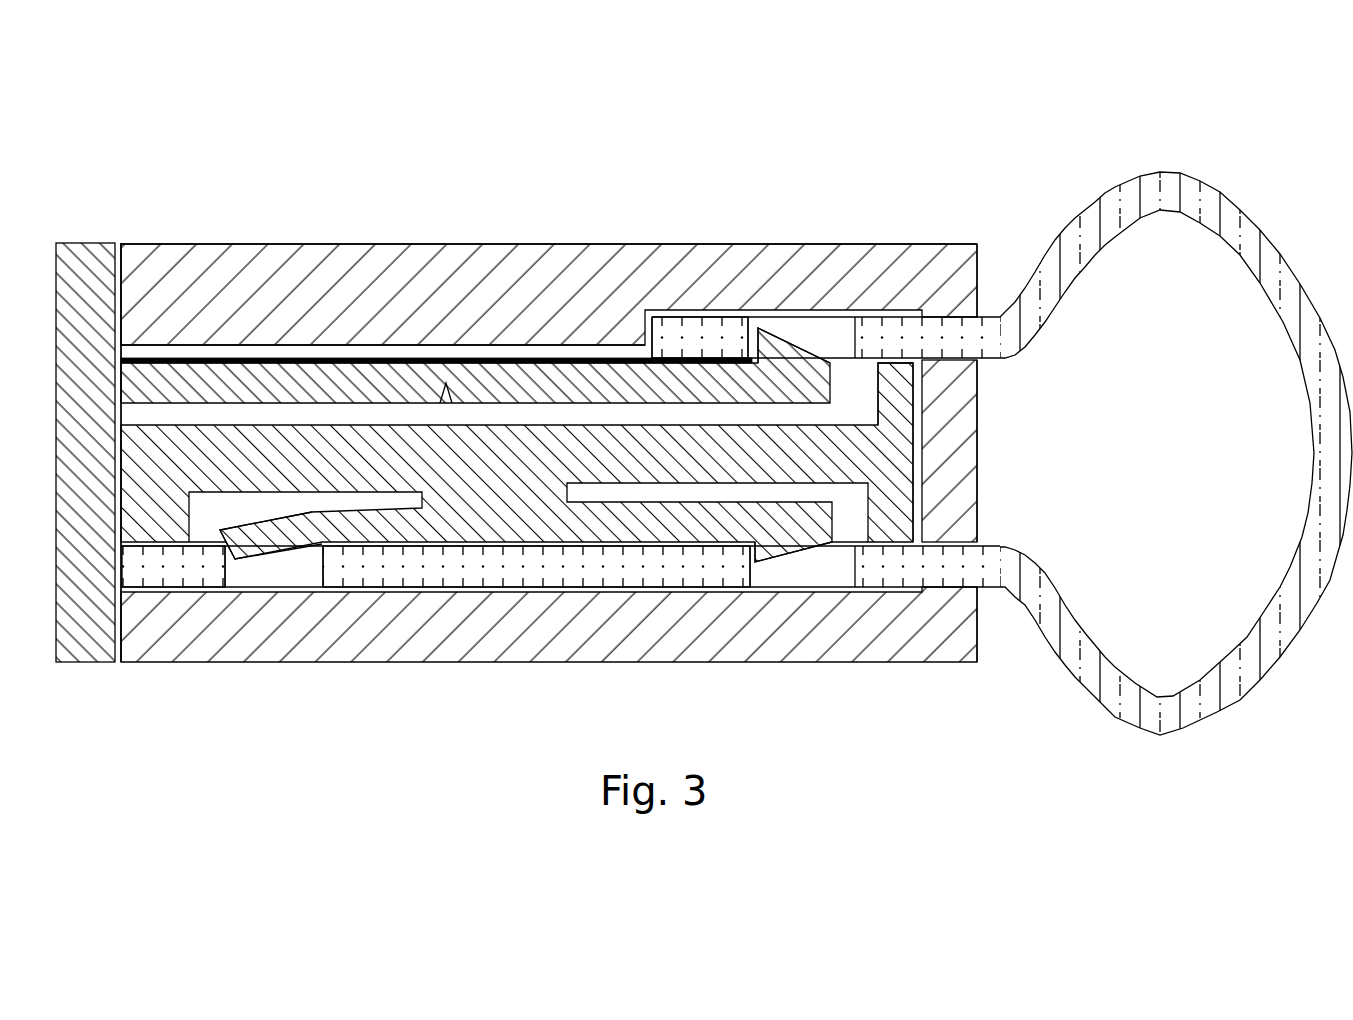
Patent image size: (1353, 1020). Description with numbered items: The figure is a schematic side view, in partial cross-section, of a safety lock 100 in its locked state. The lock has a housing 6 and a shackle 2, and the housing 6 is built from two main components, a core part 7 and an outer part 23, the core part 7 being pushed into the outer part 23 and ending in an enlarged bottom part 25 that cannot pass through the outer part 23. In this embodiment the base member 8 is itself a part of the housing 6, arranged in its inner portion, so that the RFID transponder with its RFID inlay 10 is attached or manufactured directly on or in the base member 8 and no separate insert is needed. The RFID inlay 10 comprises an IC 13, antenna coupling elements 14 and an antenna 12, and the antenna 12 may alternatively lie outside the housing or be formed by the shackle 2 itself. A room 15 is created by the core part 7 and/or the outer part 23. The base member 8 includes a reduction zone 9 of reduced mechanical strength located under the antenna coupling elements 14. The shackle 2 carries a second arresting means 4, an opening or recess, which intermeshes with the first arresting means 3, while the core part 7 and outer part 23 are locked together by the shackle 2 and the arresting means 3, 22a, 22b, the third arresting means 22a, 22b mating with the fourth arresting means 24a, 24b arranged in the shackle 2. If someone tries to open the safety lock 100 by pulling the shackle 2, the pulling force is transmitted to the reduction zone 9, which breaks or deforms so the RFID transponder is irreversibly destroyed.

The safety lock 100 is at (697, 125).
The shackle 2 is at (1128, 197).
The first arresting means 3 is at (788, 360).
The second arresting means 4 is at (824, 340).
The housing 6 is at (177, 130).
The core part 7 is at (893, 403).
The base member 8 is at (348, 383).
The reduction zone 9 is at (449, 383).
The RFID inlay 10 is at (543, 357).
The antenna 12 is at (610, 356).
The IC 13 is at (224, 363).
The antenna coupling elements 14 is at (421, 350).
The room 15 is at (392, 680).
The third arresting means 22a is at (248, 543).
The third arresting means 22b is at (775, 540).
The outer part 23 is at (730, 252).
The fourth arresting means 24a is at (293, 568).
The fourth arresting means 24b is at (817, 570).
The bottom part 25 is at (86, 643).